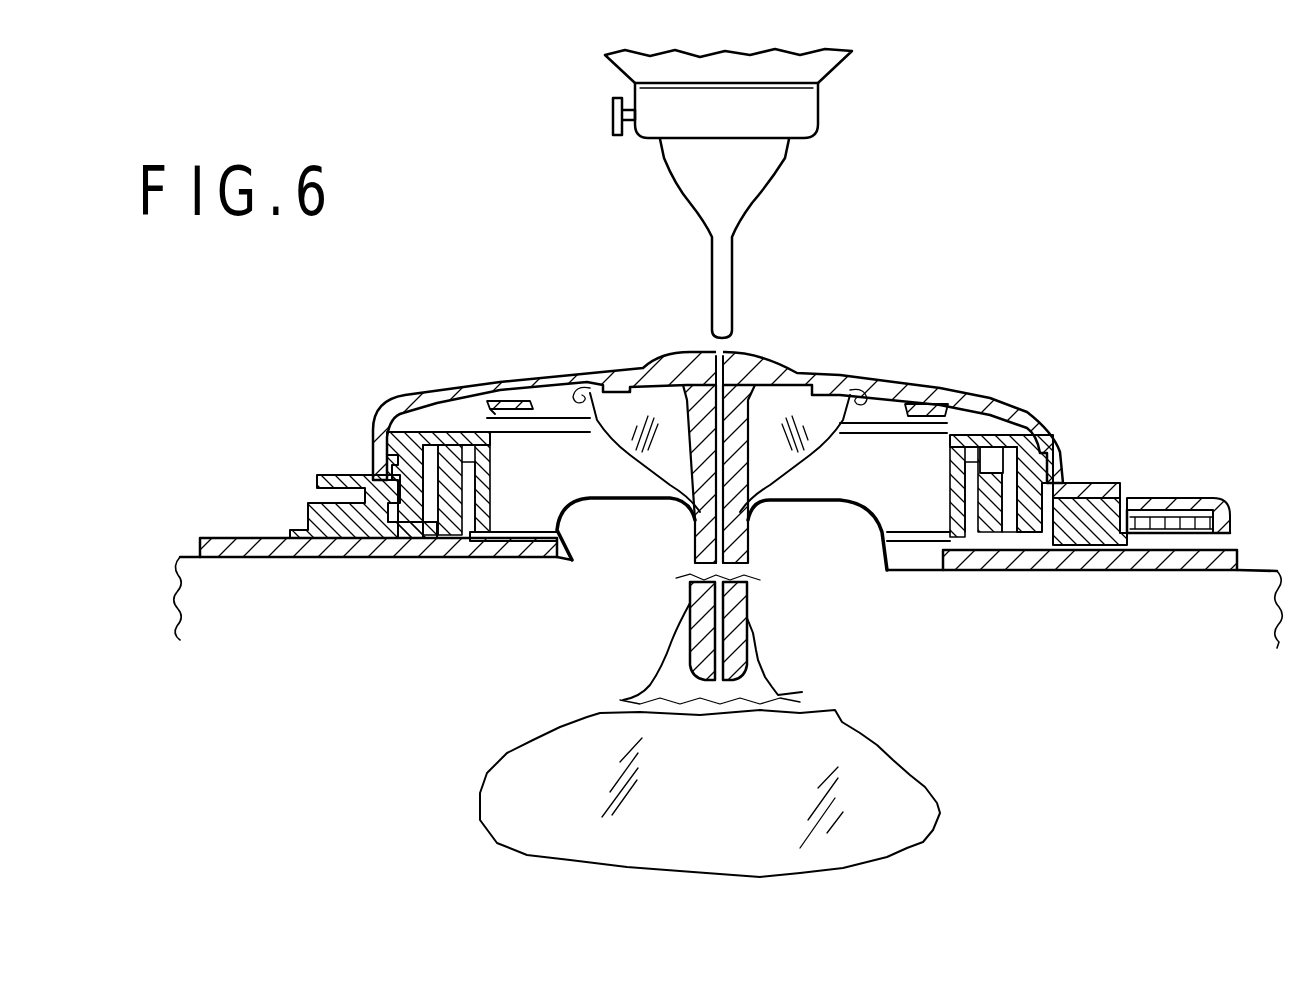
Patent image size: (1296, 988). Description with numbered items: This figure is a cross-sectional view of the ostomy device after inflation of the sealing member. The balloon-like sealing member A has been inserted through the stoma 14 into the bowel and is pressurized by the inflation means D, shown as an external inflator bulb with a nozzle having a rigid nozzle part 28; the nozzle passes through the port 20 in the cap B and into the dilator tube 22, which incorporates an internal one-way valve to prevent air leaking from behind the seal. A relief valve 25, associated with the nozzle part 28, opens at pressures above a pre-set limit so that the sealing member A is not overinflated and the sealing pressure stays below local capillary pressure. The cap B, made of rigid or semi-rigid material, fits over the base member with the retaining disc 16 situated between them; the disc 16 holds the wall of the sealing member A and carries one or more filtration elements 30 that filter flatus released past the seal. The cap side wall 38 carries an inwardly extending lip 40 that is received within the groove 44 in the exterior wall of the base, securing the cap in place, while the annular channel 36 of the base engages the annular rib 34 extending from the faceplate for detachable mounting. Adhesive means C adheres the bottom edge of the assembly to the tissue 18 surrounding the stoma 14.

The inflation means D is at (823, 98).
The relief valve 25 is at (613, 127).
The rigid nozzle part 28 is at (798, 122).
The cap B is at (405, 397).
The port 20 is at (722, 370).
The dilator tube 22 is at (703, 420).
The retaining disc 16 is at (453, 415).
The filtration element 30 is at (540, 398).
The annular channel 36 is at (997, 452).
The side wall of cap 38 is at (380, 422).
The inwardly directed protrusion 40 is at (385, 447).
The circumferential groove 44 is at (1055, 452).
The annular rib 34 is at (992, 480).
The adhesive means C is at (1190, 491).
The stoma 14 is at (823, 521).
The tissue 18 is at (1197, 592).
The sealing member A is at (660, 670).